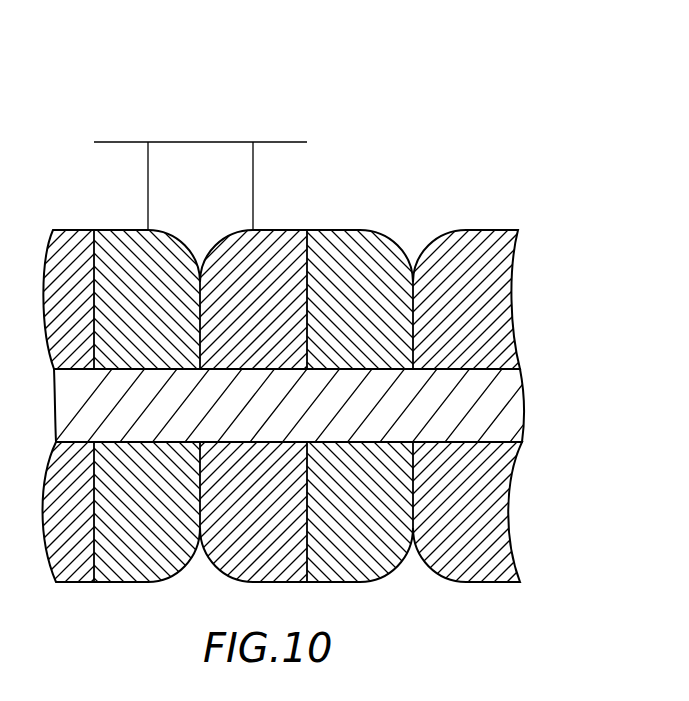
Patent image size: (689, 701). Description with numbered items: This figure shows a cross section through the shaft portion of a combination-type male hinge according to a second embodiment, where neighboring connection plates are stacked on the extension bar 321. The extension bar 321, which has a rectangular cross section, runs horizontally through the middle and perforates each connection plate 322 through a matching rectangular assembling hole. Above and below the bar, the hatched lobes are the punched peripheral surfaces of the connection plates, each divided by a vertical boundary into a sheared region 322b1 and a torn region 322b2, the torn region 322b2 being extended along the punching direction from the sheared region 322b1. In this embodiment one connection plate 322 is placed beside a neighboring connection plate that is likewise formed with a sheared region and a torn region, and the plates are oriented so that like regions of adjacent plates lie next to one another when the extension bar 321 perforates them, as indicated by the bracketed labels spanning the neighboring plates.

The connection plate 322 is at (285, 246).
The extension bar 321 is at (514, 406).
The sheared region 322b1 is at (113, 346).
The torn region 322b2 is at (176, 303).